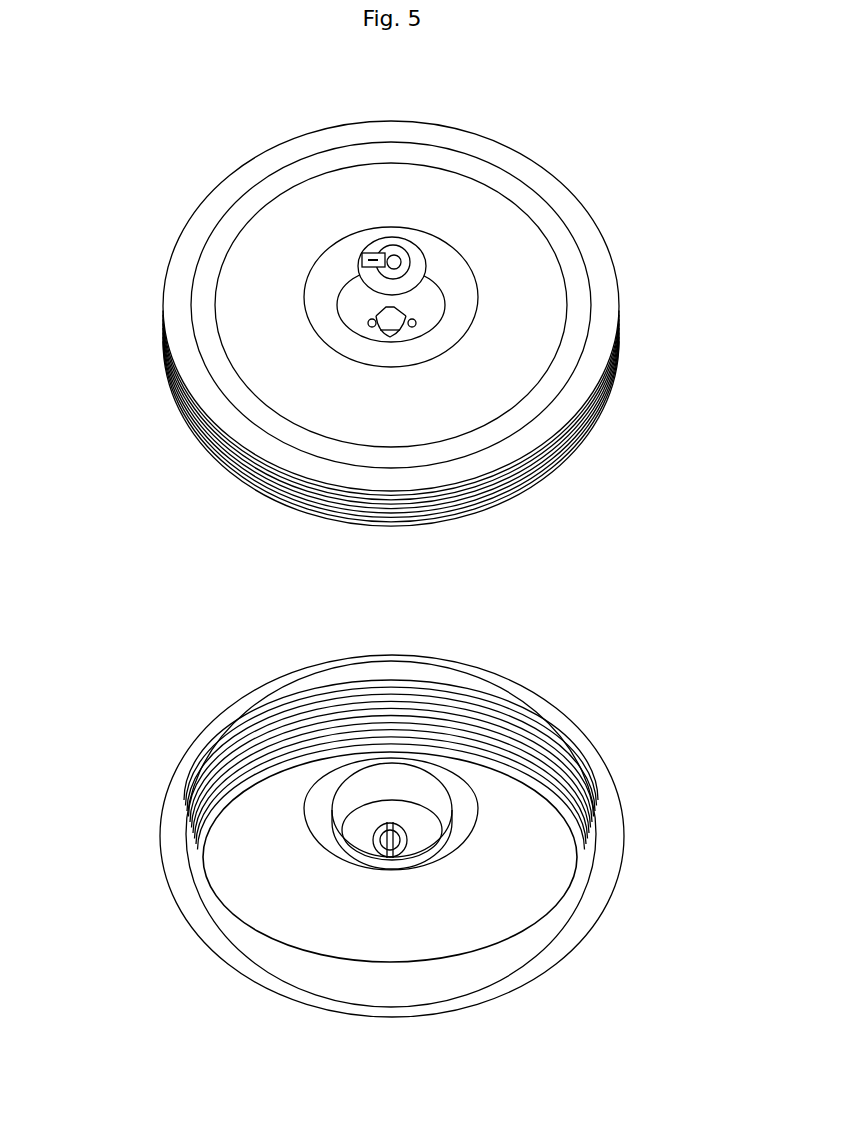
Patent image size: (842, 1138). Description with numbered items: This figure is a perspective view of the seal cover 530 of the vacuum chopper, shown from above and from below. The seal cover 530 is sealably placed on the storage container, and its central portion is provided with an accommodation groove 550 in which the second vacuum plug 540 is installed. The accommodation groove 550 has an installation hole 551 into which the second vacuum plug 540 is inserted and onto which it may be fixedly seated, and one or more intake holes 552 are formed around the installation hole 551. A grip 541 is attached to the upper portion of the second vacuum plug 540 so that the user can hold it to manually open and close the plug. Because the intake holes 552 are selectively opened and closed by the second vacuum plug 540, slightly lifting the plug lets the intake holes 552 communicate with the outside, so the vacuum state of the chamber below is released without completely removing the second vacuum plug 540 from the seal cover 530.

The seal cover 530 is at (268, 297).
The second vacuum plug 540 is at (400, 252).
The grip 541 is at (372, 250).
The accommodation groove 550 is at (428, 287).
The installation hole 551 is at (380, 328).
The intake holes 552 is at (400, 302).